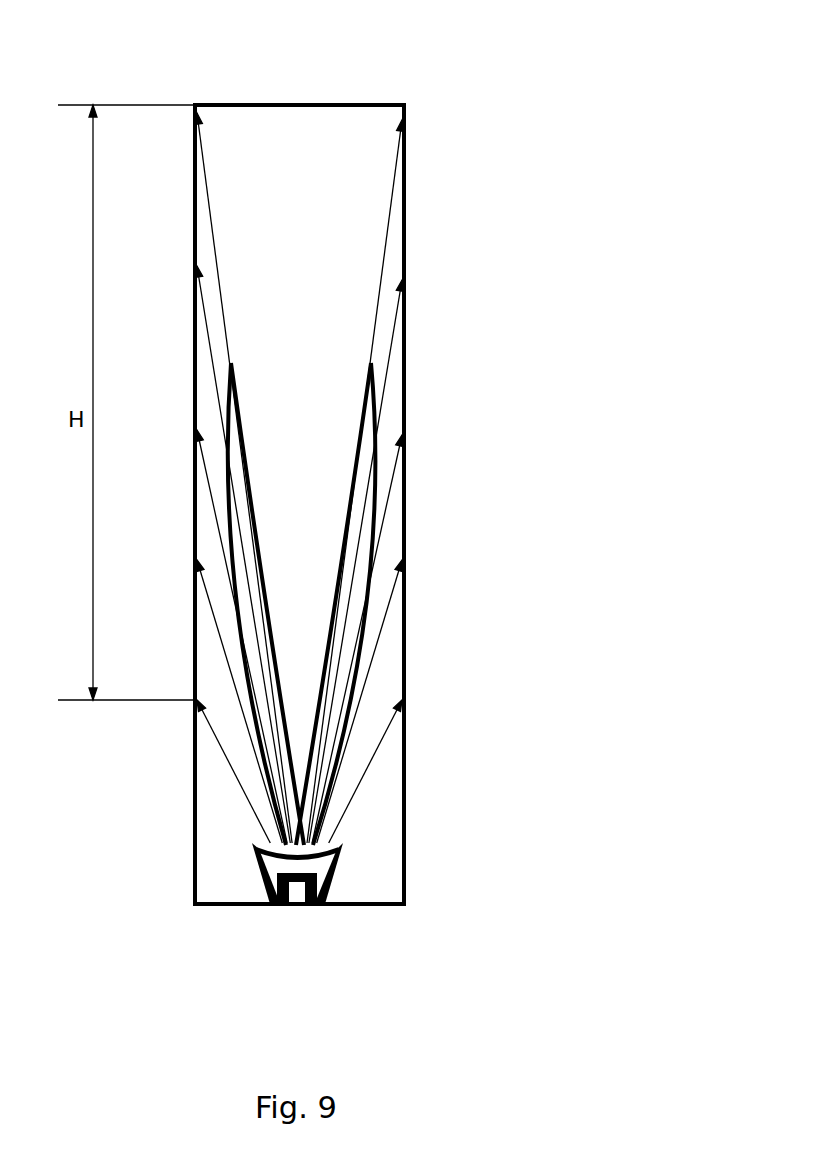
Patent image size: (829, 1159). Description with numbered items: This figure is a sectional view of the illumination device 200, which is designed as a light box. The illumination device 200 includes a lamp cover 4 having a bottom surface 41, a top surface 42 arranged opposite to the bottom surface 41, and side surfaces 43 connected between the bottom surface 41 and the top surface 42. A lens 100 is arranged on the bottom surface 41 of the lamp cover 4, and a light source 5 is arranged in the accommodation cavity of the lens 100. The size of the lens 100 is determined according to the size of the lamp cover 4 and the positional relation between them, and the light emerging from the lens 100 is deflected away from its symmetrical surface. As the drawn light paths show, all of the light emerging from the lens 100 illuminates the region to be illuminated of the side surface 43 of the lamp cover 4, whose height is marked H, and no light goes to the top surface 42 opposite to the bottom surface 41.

The illumination device 200 is at (218, 46).
The lamp cover 4 is at (417, 362).
The top surface 42 is at (353, 105).
The side surface 43 is at (407, 515).
The bottom surface 41 is at (233, 907).
The lens 100 is at (315, 866).
The light source 5 is at (300, 904).